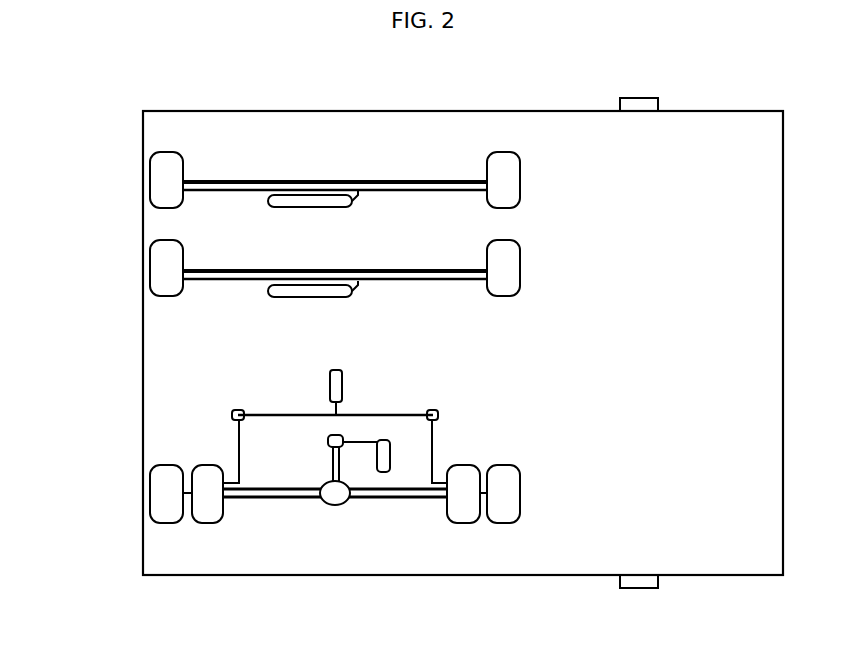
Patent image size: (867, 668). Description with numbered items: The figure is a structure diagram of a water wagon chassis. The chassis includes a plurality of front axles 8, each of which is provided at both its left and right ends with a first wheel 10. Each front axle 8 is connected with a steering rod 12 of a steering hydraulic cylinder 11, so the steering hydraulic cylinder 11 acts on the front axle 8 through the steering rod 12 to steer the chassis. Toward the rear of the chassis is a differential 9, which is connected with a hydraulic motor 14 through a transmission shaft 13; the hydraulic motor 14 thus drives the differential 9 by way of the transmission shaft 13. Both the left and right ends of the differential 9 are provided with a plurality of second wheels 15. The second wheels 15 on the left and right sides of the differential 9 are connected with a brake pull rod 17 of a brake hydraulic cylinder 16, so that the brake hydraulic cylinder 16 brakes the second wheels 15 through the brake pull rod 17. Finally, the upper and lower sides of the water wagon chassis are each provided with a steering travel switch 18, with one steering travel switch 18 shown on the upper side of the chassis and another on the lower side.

The front axle 8 is at (260, 180).
The differential 9 is at (320, 500).
The first wheel 10 is at (150, 178).
The steering hydraulic cylinder 11 is at (263, 282).
The steering rod 12 is at (263, 192).
The transmission shaft 13 is at (333, 461).
The hydraulic motor 14 is at (381, 475).
The second wheel 15 is at (148, 520).
The brake hydraulic cylinder 16 is at (328, 383).
The brake pull rod 17 is at (233, 430).
The steering travel switch 18 is at (658, 99).